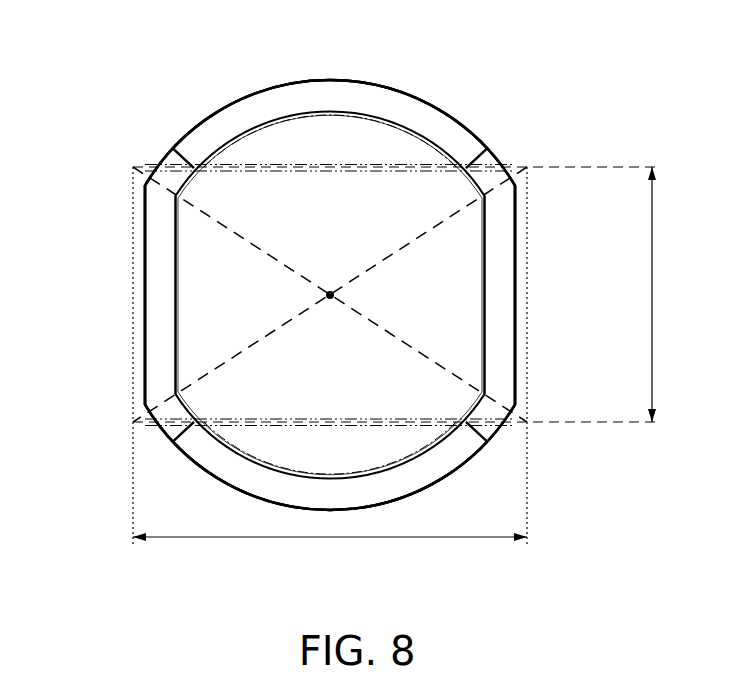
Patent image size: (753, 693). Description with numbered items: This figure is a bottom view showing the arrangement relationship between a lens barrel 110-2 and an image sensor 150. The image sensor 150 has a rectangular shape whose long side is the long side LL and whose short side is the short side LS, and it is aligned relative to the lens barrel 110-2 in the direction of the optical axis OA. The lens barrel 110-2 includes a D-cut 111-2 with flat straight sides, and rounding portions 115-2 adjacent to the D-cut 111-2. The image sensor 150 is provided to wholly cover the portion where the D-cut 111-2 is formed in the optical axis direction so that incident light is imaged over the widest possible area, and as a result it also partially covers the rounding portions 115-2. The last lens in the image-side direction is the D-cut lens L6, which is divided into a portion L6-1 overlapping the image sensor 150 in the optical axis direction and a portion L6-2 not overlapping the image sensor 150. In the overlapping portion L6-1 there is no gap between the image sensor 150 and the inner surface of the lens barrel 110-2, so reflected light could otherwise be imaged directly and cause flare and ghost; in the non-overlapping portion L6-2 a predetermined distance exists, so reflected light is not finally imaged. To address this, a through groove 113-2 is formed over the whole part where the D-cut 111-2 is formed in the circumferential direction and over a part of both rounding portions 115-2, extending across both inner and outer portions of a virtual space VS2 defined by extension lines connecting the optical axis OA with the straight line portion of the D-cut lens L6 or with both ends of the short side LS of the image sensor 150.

The lens barrel 110-2 is at (452, 120).
The D-cut 111-2 is at (145, 230).
The through groove 113-2 is at (160, 298).
The rounding portion 115-2 is at (268, 103).
The image sensor 150 is at (133, 405).
The D-cut lens L6 is at (388, 140).
The portion overlapping the image sensor L6-1 is at (242, 190).
The portion not overlapping the image sensor L6-2 is at (330, 138).
The optical axis OA is at (330, 311).
The virtual space VS2 is at (398, 315).
The short side LS is at (670, 294).
The long side LL is at (330, 551).